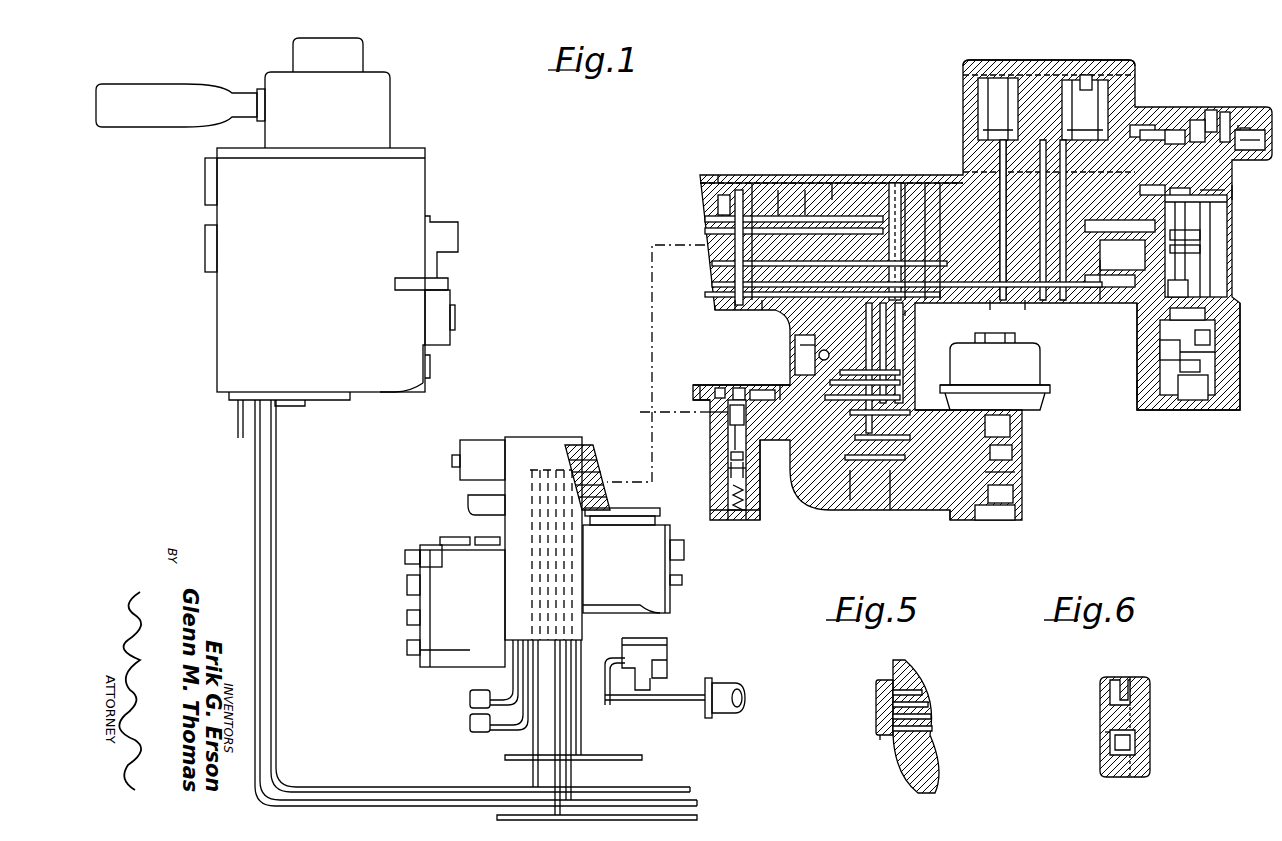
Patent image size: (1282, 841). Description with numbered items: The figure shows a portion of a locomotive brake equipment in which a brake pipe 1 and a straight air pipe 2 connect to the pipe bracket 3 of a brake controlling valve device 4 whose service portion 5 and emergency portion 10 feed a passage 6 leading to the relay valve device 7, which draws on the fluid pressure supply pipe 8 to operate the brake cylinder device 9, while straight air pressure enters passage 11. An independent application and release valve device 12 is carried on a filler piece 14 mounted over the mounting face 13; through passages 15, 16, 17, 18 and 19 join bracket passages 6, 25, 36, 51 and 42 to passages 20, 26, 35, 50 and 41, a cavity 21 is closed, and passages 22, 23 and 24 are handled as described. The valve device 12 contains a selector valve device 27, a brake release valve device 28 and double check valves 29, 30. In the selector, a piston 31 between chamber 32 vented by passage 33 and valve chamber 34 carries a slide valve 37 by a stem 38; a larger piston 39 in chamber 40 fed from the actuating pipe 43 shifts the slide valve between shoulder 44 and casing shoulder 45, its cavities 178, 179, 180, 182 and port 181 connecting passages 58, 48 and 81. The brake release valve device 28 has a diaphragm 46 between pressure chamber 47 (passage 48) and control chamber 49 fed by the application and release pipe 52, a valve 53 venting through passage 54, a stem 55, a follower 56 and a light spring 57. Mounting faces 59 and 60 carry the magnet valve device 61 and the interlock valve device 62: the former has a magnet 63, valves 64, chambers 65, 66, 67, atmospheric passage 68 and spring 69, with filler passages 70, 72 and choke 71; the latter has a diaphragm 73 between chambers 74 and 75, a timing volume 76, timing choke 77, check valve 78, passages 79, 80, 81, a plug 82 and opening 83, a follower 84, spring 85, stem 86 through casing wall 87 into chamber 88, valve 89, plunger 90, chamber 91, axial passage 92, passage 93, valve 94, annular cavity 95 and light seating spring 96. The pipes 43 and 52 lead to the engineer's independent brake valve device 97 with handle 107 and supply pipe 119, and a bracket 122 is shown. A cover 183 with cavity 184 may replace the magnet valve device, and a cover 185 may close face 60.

In FIG. 1, the brake pipe 1 is at (628, 757).
In FIG. 1, the straight air pipe 2 is at (697, 818).
In FIG. 1, the pipe bracket 3 is at (490, 660).
In FIG. 1, the brake controlling valve device 4 is at (553, 432).
In FIG. 1, the service portion 5 is at (424, 545).
In FIG. 1, the passage 6 is at (580, 445).
In FIG. 1, the relay valve device 7 is at (667, 650).
In FIG. 1, the fluid pressure supply pipe 8 is at (615, 690).
In FIG. 1, the brake cylinder device 9 is at (737, 682).
In FIG. 1, the emergency portion 10 is at (672, 605).
In FIG. 1, the passage 11 is at (606, 497).
In FIG. 1, the independent application and release valve device 12 is at (1135, 70).
In FIG. 1, the mounting face 13 is at (753, 185).
In FIG. 1, the filler piece 14 is at (857, 165).
In FIG. 5, the filler piece 14 is at (948, 772).
In FIG. 6, the filler piece 14 is at (1093, 701).
In FIG. 1, the passage 15 is at (832, 185).
In FIG. 1, the passage 16 is at (805, 190).
In FIG. 1, the passage 17 is at (779, 190).
In FIG. 1, the passage 18 is at (715, 310).
In FIG. 1, the passage 19 is at (735, 306).
In FIG. 1, the passage 20 is at (940, 185).
In FIG. 1, the cavity 21 is at (718, 200).
In FIG. 1, the passage 22 is at (926, 185).
In FIG. 1, the passage 23 is at (1142, 125).
In FIG. 1, the passage 24 is at (1023, 66).
In FIG. 1, the passage 25 is at (592, 460).
In FIG. 1, the passage 26 is at (1070, 304).
In FIG. 1, the selector valve device 27 is at (1145, 405).
In FIG. 1, the brake release valve device 28 is at (1234, 198).
In FIG. 1, the double check valve 29 is at (992, 85).
In FIG. 1, the double check valve 30 is at (1075, 85).
In FIG. 1, the piston 31 is at (1225, 395).
In FIG. 1, the chamber 32 is at (1162, 355).
In FIG. 1, the passage 33 is at (1225, 360).
In FIG. 1, the valve chamber 34 is at (1185, 192).
In FIG. 1, the passage 35 is at (1152, 190).
In FIG. 1, the passage 36 is at (598, 472).
In FIG. 1, the slide valve 37 is at (1210, 200).
In FIG. 1, the stem 38 is at (1120, 253).
In FIG. 1, the piston 39 is at (1225, 378).
In FIG. 1, the chamber 40 is at (1140, 393).
In FIG. 1, the passage 41 is at (1025, 305).
In FIG. 1, the passage 42 is at (615, 512).
In FIG. 1, the actuating pipe 43 is at (418, 803).
In FIG. 1, the shoulder 44 is at (1215, 318).
In FIG. 1, the casing shoulder 45 is at (1230, 340).
In FIG. 1, the flexible diaphragm 46 is at (1250, 130).
In FIG. 1, the pressure chamber 47 is at (1180, 130).
In FIG. 1, the passage 48 is at (1150, 130).
In FIG. 1, the control chamber 49 is at (1212, 192).
In FIG. 1, the passage 50 is at (1120, 305).
In FIG. 1, the passage 51 is at (603, 485).
In FIG. 1, the application and release pipe 52 is at (486, 792).
In FIG. 1, the valve 53 is at (1213, 110).
In FIG. 1, the passage 54 is at (1200, 120).
In FIG. 1, the stem 55 is at (1227, 112).
In FIG. 1, the follower 56 is at (1247, 128).
In FIG. 1, the light spring 57 is at (1240, 125).
In FIG. 1, the passage 58 is at (1088, 78).
In FIG. 1, the mounting face 59 is at (950, 505).
In FIG. 1, the mounting face 60 is at (760, 392).
In FIG. 5, the mounting face 60 is at (878, 692).
In FIG. 1, the dynamic brake interlock magnet valve device 61 is at (1050, 399).
In FIG. 1, the interlock valve device 62 is at (686, 394).
In FIG. 1, the magnet 63 is at (995, 371).
In FIG. 1, the valves 64 is at (1020, 460).
In FIG. 1, the chamber 65 is at (1020, 476).
In FIG. 1, the chamber 66 is at (1020, 493).
In FIG. 1, the chamber 67 is at (1020, 436).
In FIG. 1, the atmospheric passage 68 is at (918, 410).
In FIG. 5, the atmospheric passage 68 is at (932, 717).
In FIG. 6, the atmospheric passage 68 is at (1118, 680).
In FIG. 1, the spring 69 is at (990, 520).
In FIG. 1, the passage 70 is at (886, 350).
In FIG. 6, the passage 70 is at (1102, 732).
In FIG. 1, the choke 71 is at (872, 370).
In FIG. 1, the passage 72 is at (903, 330).
In FIG. 6, the passage 72 is at (1123, 760).
In FIG. 1, the flexible diaphragm 73 is at (722, 390).
In FIG. 1, the chamber 74 is at (712, 388).
In FIG. 1, the chamber 75 is at (700, 412).
In FIG. 1, the timing volume 76 is at (819, 355).
In FIG. 1, the timing choke 77 is at (800, 336).
In FIG. 1, the check valve 78 is at (800, 345).
In FIG. 1, the passage 79 is at (765, 306).
In FIG. 5, the passage 79 is at (930, 705).
In FIG. 1, the passage 80 is at (905, 310).
In FIG. 5, the passage 80 is at (925, 690).
In FIG. 1, the passage 81 is at (990, 305).
In FIG. 1, the plug 82 is at (890, 500).
In FIG. 1, the opening 83 is at (906, 185).
In FIG. 1, the diaphragm follower 84 is at (712, 408).
In FIG. 1, the spring 85 is at (728, 425).
In FIG. 1, the stem 86 is at (740, 392).
In FIG. 1, the casing wall 87 is at (728, 445).
In FIG. 1, the chamber 88 is at (730, 458).
In FIG. 1, the valve 89 is at (728, 468).
In FIG. 1, the movable plunger 90 is at (730, 478).
In FIG. 1, the chamber 91 is at (730, 517).
In FIG. 1, the axial passage 92 is at (720, 515).
In FIG. 1, the passage 93 is at (850, 470).
In FIG. 5, the passage 93 is at (932, 729).
In FIG. 1, the valve 94 is at (758, 490).
In FIG. 1, the annular cavity 95 is at (733, 492).
In FIG. 1, the light seating spring 96 is at (745, 517).
In FIG. 1, the engineer's independent brake valve device 97 is at (205, 250).
In FIG. 1, the independent brake valve handle 107 is at (157, 93).
In FIG. 1, the supply pipe 119 is at (270, 420).
In FIG. 1, the bracket 122 is at (452, 346).
In FIG. 1, the cavity 178 is at (1225, 216).
In FIG. 1, the cavity 179 is at (1215, 277).
In FIG. 1, the cavity 180 is at (1220, 240).
In FIG. 1, the port 181 is at (1220, 255).
In FIG. 1, the cavity 182 is at (1220, 296).
In FIG. 6, the cover 183 is at (1150, 705).
In FIG. 6, the cavity 184 is at (1140, 742).
In FIG. 5, the cover 185 is at (878, 733).